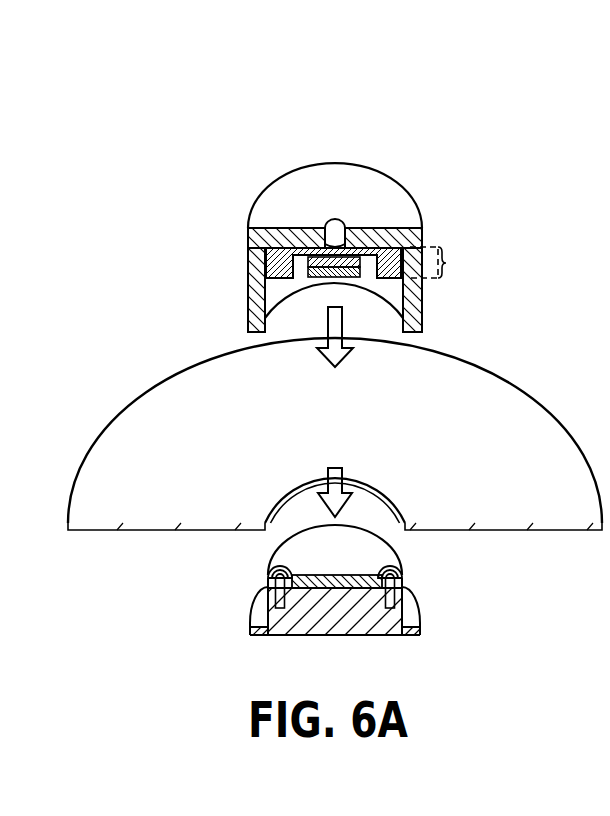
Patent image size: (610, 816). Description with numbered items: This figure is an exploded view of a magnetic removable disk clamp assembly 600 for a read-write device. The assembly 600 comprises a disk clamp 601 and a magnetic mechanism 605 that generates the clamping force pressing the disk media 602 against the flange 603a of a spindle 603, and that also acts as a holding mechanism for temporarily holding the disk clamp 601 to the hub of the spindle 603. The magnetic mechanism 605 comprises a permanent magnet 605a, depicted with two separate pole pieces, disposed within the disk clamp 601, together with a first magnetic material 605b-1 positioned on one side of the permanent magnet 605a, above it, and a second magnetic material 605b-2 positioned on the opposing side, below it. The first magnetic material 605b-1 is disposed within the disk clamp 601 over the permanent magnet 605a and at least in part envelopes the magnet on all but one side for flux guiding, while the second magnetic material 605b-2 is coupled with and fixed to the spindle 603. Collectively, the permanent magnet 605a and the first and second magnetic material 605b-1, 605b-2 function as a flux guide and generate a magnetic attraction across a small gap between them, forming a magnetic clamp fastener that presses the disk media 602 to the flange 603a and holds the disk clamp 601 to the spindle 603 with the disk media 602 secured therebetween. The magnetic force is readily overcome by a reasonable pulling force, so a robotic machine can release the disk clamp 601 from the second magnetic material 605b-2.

The magnetic removable disk clamp assembly 600 is at (229, 116).
The disk clamp 601 is at (248, 251).
The disk media 602 is at (563, 512).
The spindle 603 is at (348, 620).
The flange 603a is at (263, 643).
The magnetic mechanism 605 is at (203, 560).
The permanent magnet 605a is at (312, 277).
The first magnetic material 605b-1 is at (418, 250).
The second magnetic material 605b-2 is at (335, 577).